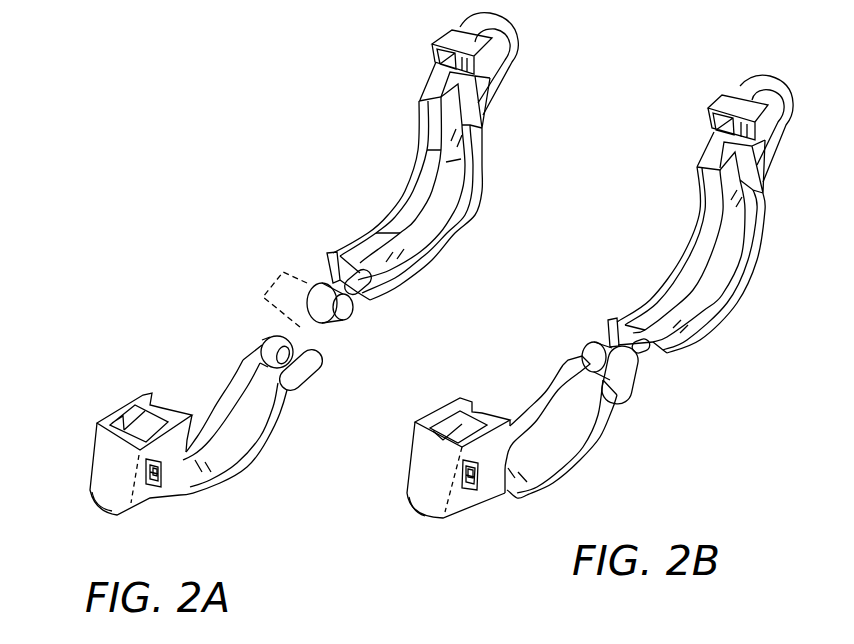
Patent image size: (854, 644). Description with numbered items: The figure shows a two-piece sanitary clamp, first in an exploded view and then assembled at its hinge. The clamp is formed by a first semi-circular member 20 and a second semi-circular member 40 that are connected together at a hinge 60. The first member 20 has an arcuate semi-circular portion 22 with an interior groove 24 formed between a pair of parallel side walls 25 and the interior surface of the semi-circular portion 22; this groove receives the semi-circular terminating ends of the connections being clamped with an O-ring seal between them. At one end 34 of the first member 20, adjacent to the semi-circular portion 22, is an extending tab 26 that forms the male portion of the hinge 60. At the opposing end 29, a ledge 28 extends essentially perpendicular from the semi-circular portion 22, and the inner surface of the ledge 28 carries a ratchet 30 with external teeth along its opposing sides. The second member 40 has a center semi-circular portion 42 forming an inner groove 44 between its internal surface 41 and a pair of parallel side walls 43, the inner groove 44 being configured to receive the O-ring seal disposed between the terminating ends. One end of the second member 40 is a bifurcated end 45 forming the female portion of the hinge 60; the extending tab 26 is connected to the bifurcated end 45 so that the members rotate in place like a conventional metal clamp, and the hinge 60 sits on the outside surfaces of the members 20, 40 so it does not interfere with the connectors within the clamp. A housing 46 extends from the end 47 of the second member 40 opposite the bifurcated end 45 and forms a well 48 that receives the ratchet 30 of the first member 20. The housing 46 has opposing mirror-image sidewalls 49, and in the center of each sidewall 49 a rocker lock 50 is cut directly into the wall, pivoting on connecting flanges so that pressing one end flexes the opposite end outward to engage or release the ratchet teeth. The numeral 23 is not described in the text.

In FIG. 2A, the first semi-circular member 20 is at (407, 183).
In FIG. 2B, the first semi-circular member 20 is at (685, 257).
In FIG. 2A, the semi-circular portion 22 is at (462, 228).
In FIG. 2B, the semi-circular portion 22 is at (755, 277).
In FIG. 2A, the channel 23 is at (457, 157).
In FIG. 2A, the interior groove 24 is at (456, 172).
In FIG. 2A, the side walls 25 is at (375, 248).
In FIG. 2A, the extending tab 26 is at (338, 322).
In FIG. 2A, the ledge 28 is at (497, 92).
In FIG. 2B, the ledge 28 is at (777, 152).
In FIG. 2A, the opposing end 29 is at (417, 100).
In FIG. 2B, the opposing end 29 is at (697, 168).
In FIG. 2A, the ratchet 30 is at (437, 33).
In FIG. 2B, the ratchet 30 is at (715, 105).
In FIG. 2A, the end 34 is at (327, 257).
In FIG. 2B, the end 34 is at (610, 320).
In FIG. 2A, the second semi-circular member 40 is at (243, 476).
In FIG. 2A, the internal surface 41 is at (195, 418).
In FIG. 2A, the center semi-circular portion 42 is at (215, 449).
In FIG. 2A, the side walls 43 is at (240, 356).
In FIG. 2B, the side walls 43 is at (553, 383).
In FIG. 2A, the inner groove 44 is at (247, 430).
In FIG. 2B, the inner groove 44 is at (568, 440).
In FIG. 2A, the bifurcated end 45 is at (310, 377).
In FIG. 2A, the housing 46 is at (92, 500).
In FIG. 2B, the housing 46 is at (403, 498).
In FIG. 2A, the end 47 is at (92, 463).
In FIG. 2B, the end 47 is at (458, 458).
In FIG. 2A, the well 48 is at (132, 413).
In FIG. 2B, the well 48 is at (447, 423).
In FIG. 2A, the sidewalls 49 is at (142, 503).
In FIG. 2B, the sidewalls 49 is at (458, 498).
In FIG. 2A, the rocker lock 50 is at (161, 486).
In FIG. 2B, the rocker lock 50 is at (477, 493).
In FIG. 2B, the hinge 60 is at (647, 380).